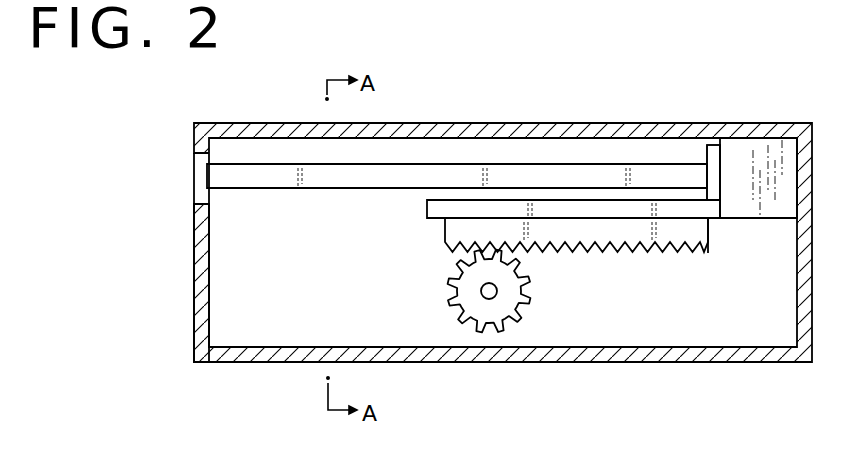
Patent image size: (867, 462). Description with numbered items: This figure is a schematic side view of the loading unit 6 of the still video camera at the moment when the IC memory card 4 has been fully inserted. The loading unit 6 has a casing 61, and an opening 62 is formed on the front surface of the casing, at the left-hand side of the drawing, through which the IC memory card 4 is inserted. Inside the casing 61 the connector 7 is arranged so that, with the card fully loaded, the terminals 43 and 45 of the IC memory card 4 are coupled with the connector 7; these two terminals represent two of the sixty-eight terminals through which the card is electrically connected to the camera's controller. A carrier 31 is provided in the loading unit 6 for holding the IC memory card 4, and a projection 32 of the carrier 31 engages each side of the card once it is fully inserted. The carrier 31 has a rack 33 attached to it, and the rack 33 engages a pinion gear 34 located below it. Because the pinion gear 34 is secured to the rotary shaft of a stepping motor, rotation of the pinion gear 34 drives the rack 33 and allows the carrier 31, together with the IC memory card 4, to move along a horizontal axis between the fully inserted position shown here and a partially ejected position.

The IC memory card 4 is at (425, 168).
The loading unit 6 is at (673, 302).
The connector 7 is at (708, 205).
The carrier 31 is at (547, 210).
The projection 32 is at (718, 152).
The rack 33 is at (597, 252).
The pinion gear 34 is at (489, 310).
The terminal 43 is at (707, 172).
The terminal 45 is at (713, 172).
The casing 61 is at (195, 308).
The opening 62 is at (199, 168).